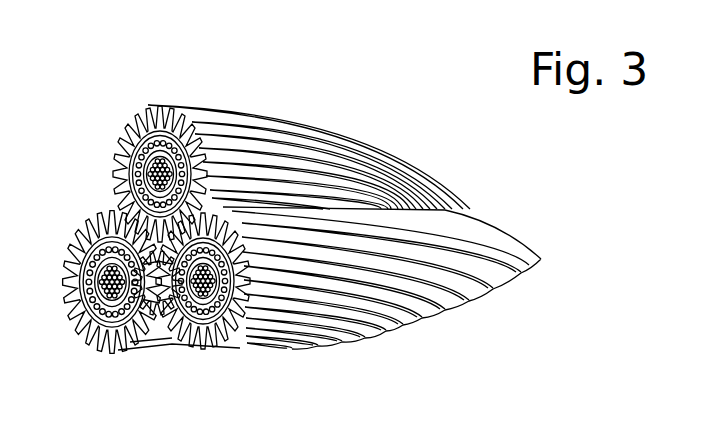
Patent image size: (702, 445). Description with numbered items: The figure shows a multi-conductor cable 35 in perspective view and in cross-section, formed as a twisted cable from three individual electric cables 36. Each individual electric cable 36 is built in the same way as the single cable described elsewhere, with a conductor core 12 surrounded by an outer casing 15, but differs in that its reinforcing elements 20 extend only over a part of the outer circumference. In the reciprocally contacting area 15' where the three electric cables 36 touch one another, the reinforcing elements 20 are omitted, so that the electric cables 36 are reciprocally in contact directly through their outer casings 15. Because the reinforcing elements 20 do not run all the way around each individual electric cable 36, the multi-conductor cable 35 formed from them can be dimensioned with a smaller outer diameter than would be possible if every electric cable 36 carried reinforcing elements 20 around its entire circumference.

The multi-conductor cable 35 is at (100, 96).
The reinforcing elements 20 is at (217, 112).
The outer casing 15 is at (167, 258).
The reciprocally contacting area 15' is at (157, 330).
The hub 12 is at (88, 272).
The individual electric cables 36 is at (82, 342).